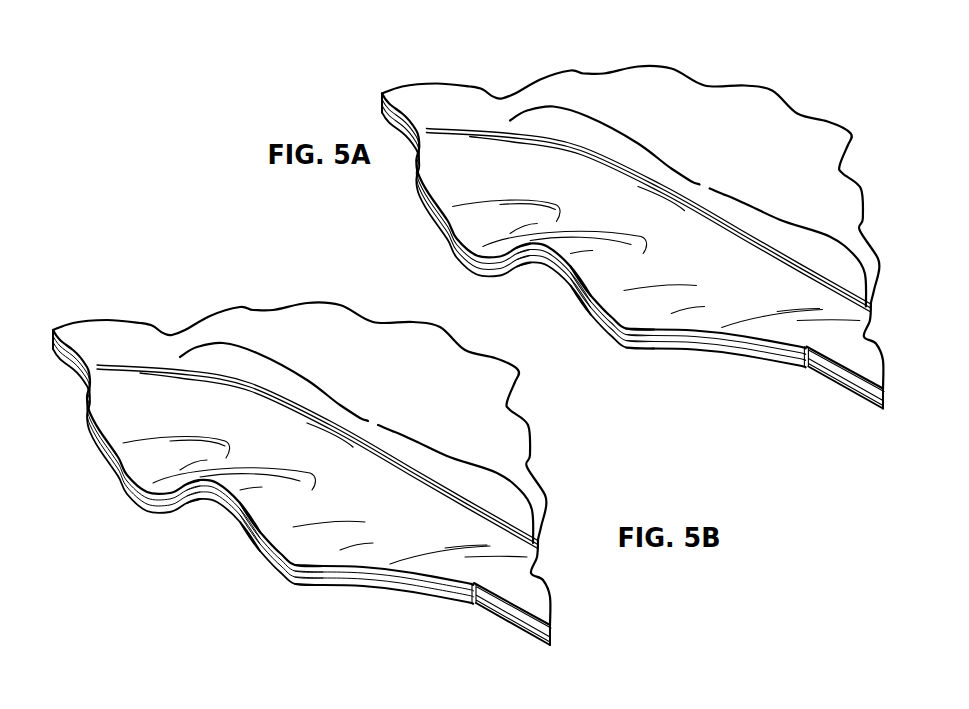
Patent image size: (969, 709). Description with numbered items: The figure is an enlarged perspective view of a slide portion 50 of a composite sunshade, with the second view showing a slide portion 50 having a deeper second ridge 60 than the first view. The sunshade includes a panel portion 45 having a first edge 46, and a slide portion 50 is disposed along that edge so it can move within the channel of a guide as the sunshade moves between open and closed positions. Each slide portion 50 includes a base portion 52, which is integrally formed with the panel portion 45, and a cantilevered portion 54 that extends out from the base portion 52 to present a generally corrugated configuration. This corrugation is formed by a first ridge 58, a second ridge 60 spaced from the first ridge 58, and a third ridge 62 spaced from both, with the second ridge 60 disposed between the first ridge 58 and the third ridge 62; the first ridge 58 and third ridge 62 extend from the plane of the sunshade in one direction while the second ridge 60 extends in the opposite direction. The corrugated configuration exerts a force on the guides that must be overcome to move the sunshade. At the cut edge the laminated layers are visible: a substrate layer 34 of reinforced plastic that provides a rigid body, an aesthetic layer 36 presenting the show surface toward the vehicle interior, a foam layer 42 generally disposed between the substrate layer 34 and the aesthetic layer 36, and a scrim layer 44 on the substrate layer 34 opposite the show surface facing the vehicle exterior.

In FIG. 5A, the slide portion 50 is at (631, 169).
In FIG. 5B, the slide portion 50 is at (185, 284).
In FIG. 5A, the panel portion 45 is at (656, 193).
In FIG. 5B, the panel portion 45 is at (303, 313).
In FIG. 5A, the base portion 52 is at (648, 208).
In FIG. 5B, the base portion 52 is at (360, 418).
In FIG. 5A, the first ridge 58 is at (456, 185).
In FIG. 5B, the first ridge 58 is at (131, 489).
In FIG. 5A, the second ridge 60 is at (548, 278).
In FIG. 5B, the second ridge 60 is at (213, 491).
In FIG. 5A, the third ridge 62 is at (613, 327).
In FIG. 5B, the third ridge 62 is at (297, 574).
In FIG. 5A, the cantilevered portion 54 is at (717, 364).
In FIG. 5B, the cantilevered portion 54 is at (476, 606).
In FIG. 5A, the aesthetic layer 36 is at (886, 346).
In FIG. 5B, the aesthetic layer 36 is at (539, 590).
In FIG. 5A, the foam layer 42 is at (864, 369).
In FIG. 5B, the foam layer 42 is at (553, 631).
In FIG. 5A, the first edge 46 is at (844, 390).
In FIG. 5B, the first edge 46 is at (527, 620).
In FIG. 5A, the scrim layer 44 is at (895, 425).
In FIG. 5B, the scrim layer 44 is at (552, 645).
In FIG. 5A, the substrate layer 34 is at (870, 405).
In FIG. 5B, the substrate layer 34 is at (557, 637).